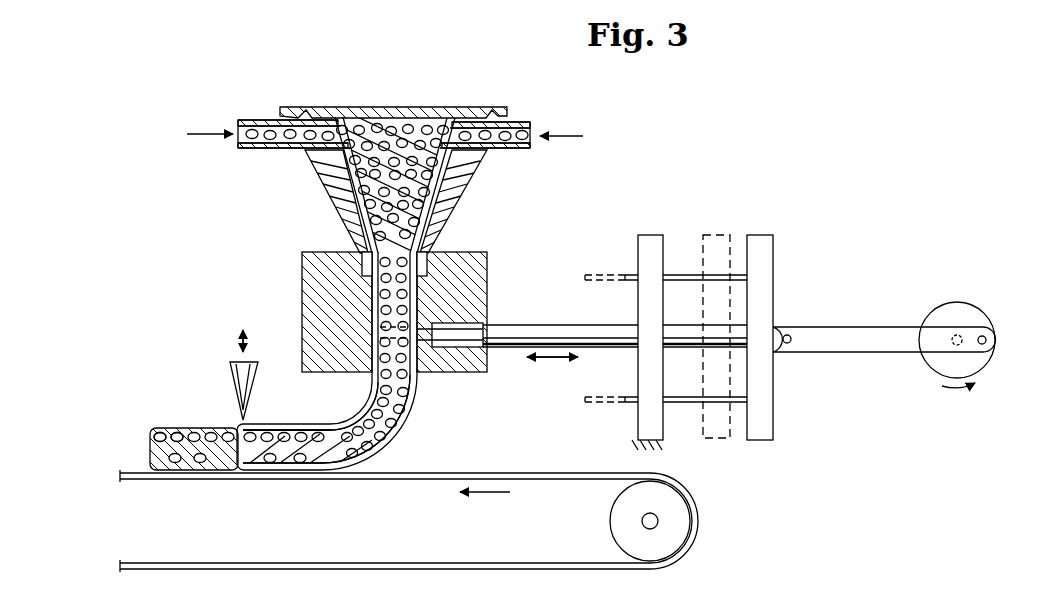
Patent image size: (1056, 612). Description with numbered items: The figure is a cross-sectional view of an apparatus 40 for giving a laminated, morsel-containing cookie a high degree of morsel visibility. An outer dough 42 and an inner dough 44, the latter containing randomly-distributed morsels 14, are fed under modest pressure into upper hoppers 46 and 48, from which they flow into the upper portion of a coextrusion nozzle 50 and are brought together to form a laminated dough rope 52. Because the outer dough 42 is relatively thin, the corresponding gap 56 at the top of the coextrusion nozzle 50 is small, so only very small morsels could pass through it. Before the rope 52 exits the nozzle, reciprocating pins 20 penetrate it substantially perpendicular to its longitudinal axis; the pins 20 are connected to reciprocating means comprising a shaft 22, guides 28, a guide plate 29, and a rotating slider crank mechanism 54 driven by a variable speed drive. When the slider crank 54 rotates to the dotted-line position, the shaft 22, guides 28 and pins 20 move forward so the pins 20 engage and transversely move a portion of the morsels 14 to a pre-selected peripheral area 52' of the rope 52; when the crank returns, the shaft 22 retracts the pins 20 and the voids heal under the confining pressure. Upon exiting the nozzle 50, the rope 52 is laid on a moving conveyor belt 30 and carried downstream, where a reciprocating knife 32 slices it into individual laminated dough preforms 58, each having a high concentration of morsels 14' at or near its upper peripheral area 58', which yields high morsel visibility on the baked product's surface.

The morsels 14 is at (393, 263).
The morsels 14' is at (146, 415).
The reciprocating pins 20 is at (460, 327).
The shaft 22 is at (552, 325).
The guides 28 is at (683, 275).
The guide plate 29 is at (645, 419).
The conveyor belt 30 is at (365, 476).
The reciprocating knife 32 is at (237, 378).
The apparatus 40 is at (566, 204).
The outer dough 42 is at (468, 133).
The inner dough 44 is at (258, 140).
The upper hopper 46 is at (470, 172).
The upper hopper 48 is at (330, 176).
The coextrusion nozzle 50 is at (487, 260).
The laminated dough rope 52 is at (346, 293).
The peripheral area 52' is at (326, 398).
The rotating slider crank mechanism 54 is at (991, 294).
The gap 56 is at (364, 256).
The laminated dough preforms 58 is at (194, 472).
The upper peripheral area 58' is at (257, 409).